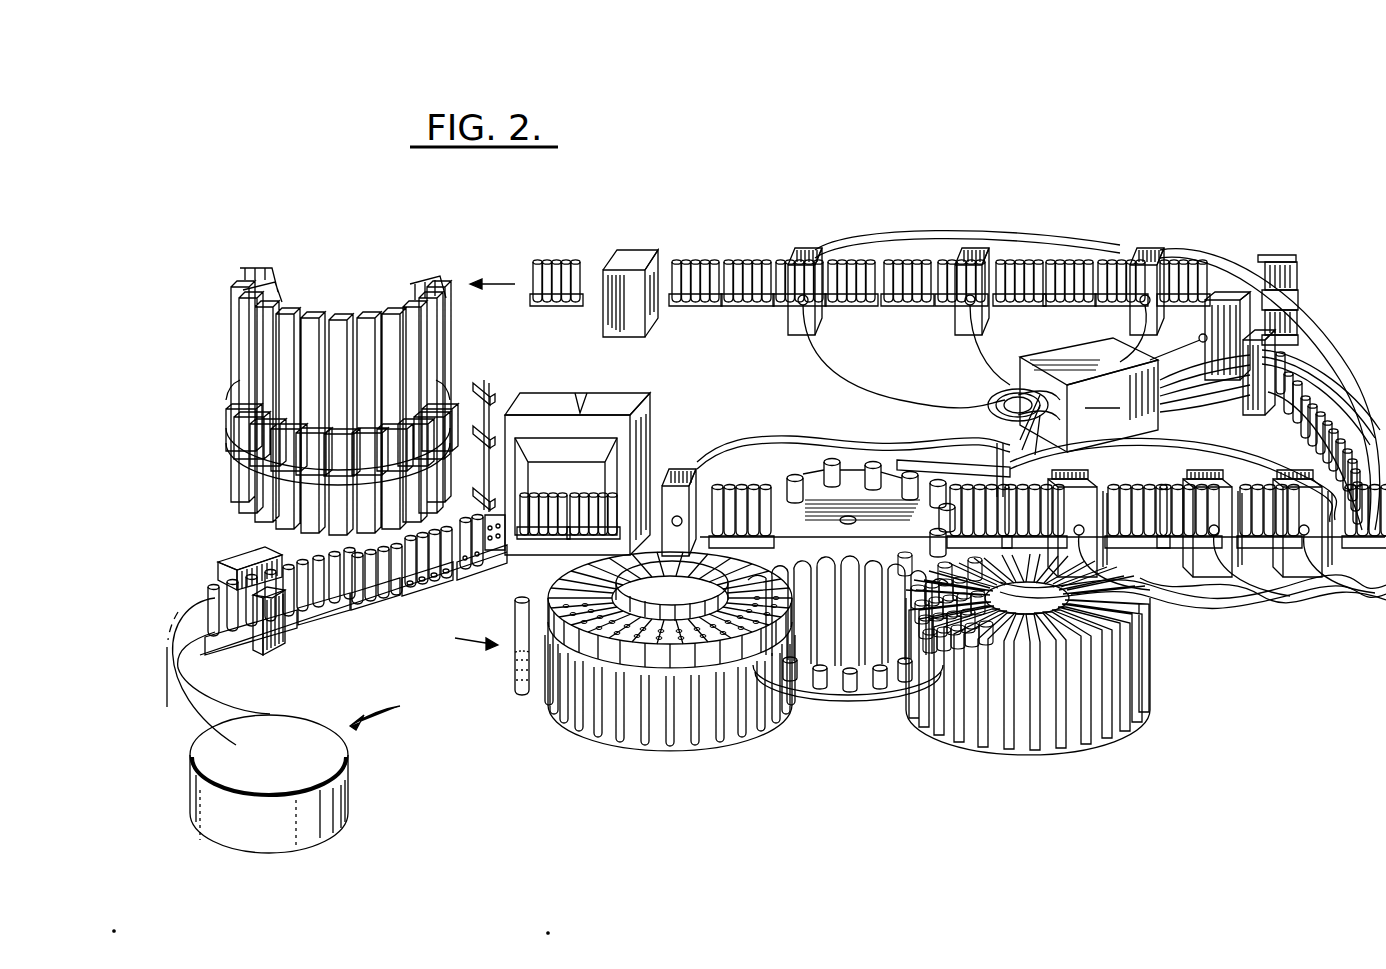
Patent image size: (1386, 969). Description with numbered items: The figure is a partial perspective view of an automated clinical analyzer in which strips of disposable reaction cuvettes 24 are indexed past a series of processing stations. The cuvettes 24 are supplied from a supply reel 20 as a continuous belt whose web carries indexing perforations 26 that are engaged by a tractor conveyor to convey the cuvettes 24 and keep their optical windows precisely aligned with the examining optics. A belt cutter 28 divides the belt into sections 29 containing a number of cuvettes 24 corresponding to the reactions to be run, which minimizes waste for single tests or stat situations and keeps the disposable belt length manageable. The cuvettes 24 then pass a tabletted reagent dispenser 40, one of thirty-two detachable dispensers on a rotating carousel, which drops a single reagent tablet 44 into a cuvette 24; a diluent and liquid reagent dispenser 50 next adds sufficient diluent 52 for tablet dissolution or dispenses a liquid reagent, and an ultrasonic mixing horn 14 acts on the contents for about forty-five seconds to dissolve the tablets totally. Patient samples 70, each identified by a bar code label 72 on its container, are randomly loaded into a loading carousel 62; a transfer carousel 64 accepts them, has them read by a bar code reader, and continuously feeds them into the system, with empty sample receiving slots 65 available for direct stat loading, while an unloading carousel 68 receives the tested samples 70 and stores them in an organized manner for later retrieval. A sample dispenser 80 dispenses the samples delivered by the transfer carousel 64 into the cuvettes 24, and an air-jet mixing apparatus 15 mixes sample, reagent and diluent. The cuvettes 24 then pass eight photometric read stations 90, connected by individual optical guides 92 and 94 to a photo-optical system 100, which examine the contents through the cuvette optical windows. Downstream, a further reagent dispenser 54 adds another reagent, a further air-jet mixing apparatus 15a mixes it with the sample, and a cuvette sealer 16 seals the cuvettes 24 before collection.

The ultrasonic mixing horn 14 is at (612, 396).
The air-jet mixing apparatus 15 is at (1050, 520).
The further air-jet mixing apparatus 15a is at (1255, 375).
The cuvette sealer 16 is at (628, 253).
The supply reel 20 is at (348, 805).
The cuvettes 24 is at (216, 598).
The indexing perforations 26 is at (222, 637).
The belt cutter 28 is at (275, 632).
The sections 29 is at (379, 590).
The tabletted reagent dispenser 40 is at (413, 300).
The reagent tablet 44 is at (410, 562).
The diluent and liquid reagent dispenser 50 is at (478, 388).
The diluent 52 is at (473, 554).
The further reagent dispenser 54 is at (1297, 268).
The loading carousel 62 is at (702, 750).
The transfer carousel 64 is at (856, 682).
The sample receiving slots 65 is at (814, 565).
The unloading carousel 68 is at (1130, 738).
The patient sample 70 is at (520, 692).
The bar code label 72 is at (514, 660).
The sample dispenser 80 is at (950, 462).
The photometric read stations 90 is at (790, 250).
The optical guide 92 is at (1202, 388).
The optical guide 94 is at (1000, 395).
The photo-optical system 100 is at (1088, 395).